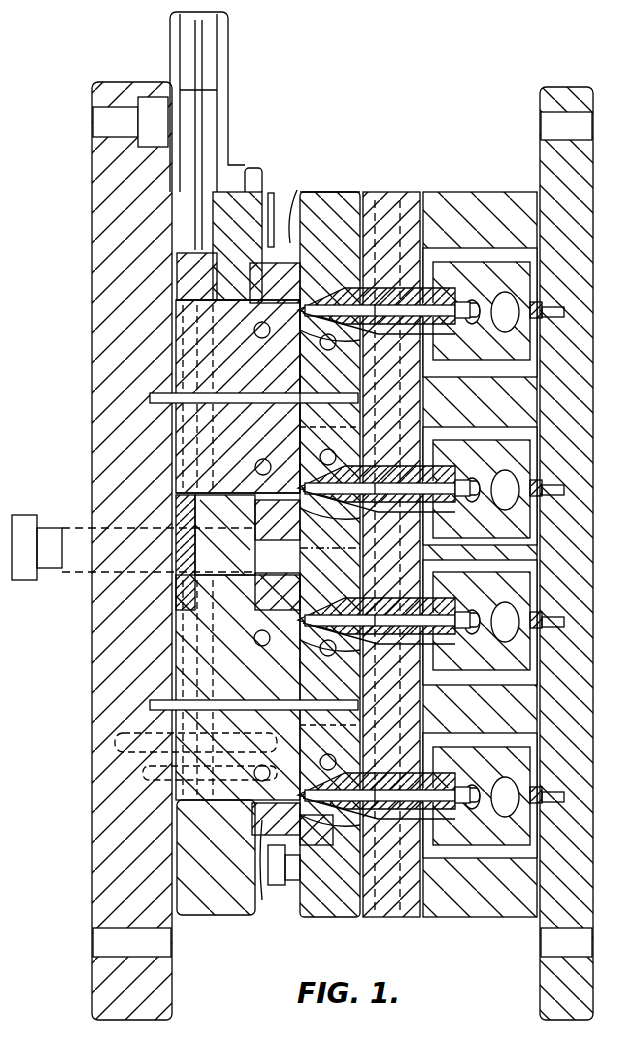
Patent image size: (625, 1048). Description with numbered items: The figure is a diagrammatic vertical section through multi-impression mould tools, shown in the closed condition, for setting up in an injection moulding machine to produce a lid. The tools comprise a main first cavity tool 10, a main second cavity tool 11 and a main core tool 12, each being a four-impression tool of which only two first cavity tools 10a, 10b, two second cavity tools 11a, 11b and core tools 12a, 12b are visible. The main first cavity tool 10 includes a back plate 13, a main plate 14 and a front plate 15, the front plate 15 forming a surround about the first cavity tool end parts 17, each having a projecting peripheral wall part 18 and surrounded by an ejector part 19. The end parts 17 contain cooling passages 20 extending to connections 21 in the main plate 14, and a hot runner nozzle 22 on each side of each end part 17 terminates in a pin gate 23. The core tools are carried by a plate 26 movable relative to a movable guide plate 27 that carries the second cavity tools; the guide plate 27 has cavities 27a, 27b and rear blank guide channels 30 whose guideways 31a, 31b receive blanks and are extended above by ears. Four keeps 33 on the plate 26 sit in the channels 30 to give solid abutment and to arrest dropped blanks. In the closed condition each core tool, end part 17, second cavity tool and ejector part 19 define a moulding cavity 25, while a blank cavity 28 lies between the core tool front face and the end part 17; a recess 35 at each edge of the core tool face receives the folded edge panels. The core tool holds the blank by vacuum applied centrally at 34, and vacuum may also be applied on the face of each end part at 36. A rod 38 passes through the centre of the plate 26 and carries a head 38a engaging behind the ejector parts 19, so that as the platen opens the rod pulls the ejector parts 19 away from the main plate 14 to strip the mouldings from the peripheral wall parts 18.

The main first cavity tool 10 is at (342, 198).
The first cavity tool 10a is at (346, 430).
The first cavity tool 10b is at (346, 724).
The main second cavity tool 11 is at (271, 209).
The second cavity tool 11a is at (302, 205).
The second cavity tool 11b is at (277, 869).
The main core tool 12 is at (265, 298).
The core tool 12a is at (296, 389).
The core tool 12b is at (296, 678).
The back plate 13 is at (550, 172).
The main plate 14 is at (440, 205).
The front plate 15 is at (337, 200).
The first cavity tool end part 17 is at (352, 400).
The peripheral wall part 18 is at (274, 484).
The ejector part 19 is at (318, 262).
The cooling passage 20 is at (298, 426).
The connection 21 is at (398, 200).
The hot runner nozzle 22 is at (392, 288).
The pin gate 23 is at (300, 484).
The moulding cavity 25 is at (277, 555).
The core tool carrier plate 26 is at (92, 216).
The movable guide plate 27 is at (250, 180).
The cavity in plate 27 27a is at (170, 62).
The cavity in plate 27 27b is at (238, 705).
The blank cavity 28 is at (300, 450).
The blank guide channel 30 is at (205, 91).
The guideway 31a is at (205, 33).
The guideway 31b is at (200, 64).
The keep 33 is at (190, 265).
The vacuum 34 is at (254, 385).
The recess 35 is at (250, 806).
The vacuum 36 is at (254, 740).
The rod 38 is at (24, 525).
The head 38a is at (345, 548).